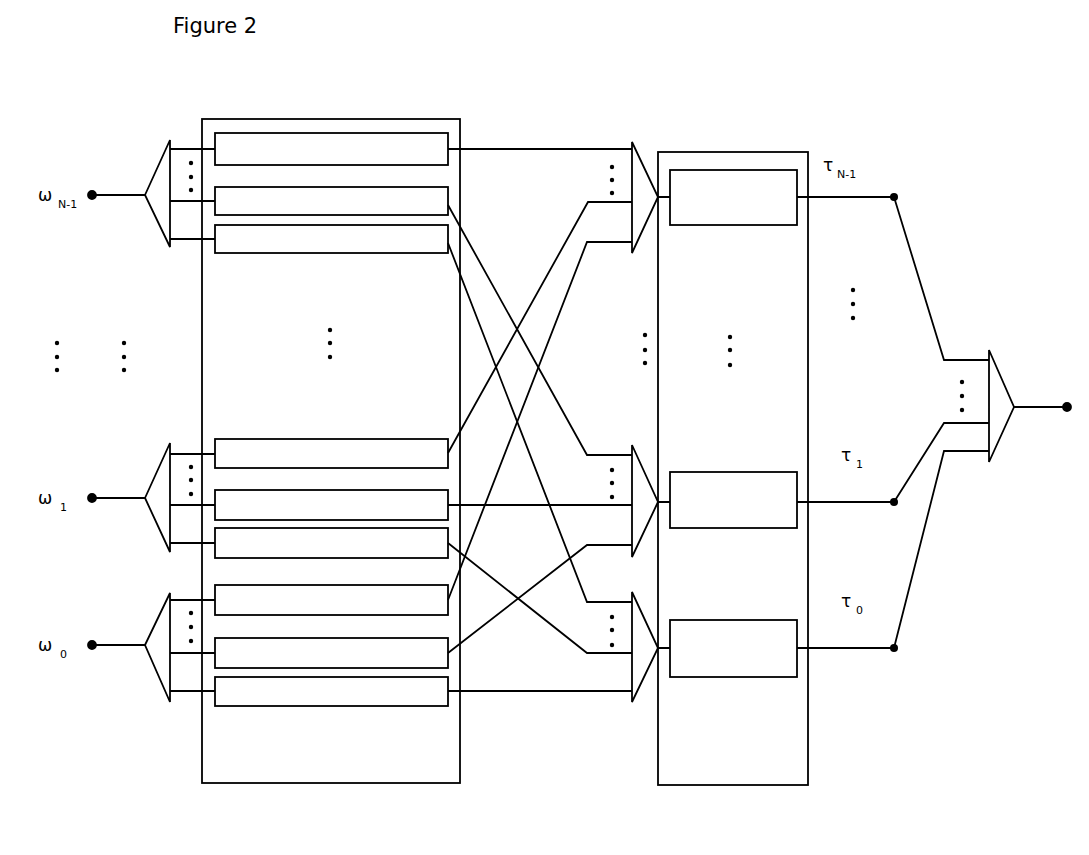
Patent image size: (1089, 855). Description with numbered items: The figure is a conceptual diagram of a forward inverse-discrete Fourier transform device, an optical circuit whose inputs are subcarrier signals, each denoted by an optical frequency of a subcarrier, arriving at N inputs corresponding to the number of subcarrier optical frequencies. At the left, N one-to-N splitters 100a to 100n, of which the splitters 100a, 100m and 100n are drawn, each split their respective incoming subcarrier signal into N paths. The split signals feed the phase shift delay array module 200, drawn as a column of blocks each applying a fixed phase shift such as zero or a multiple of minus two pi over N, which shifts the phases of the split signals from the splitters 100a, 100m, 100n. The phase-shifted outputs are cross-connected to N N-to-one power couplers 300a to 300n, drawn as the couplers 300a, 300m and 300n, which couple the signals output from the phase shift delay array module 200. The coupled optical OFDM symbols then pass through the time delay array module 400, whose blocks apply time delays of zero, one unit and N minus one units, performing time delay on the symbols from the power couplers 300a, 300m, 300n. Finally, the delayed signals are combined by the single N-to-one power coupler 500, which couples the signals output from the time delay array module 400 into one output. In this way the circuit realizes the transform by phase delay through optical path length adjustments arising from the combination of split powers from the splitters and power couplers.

The 1:N splitter 100a is at (164, 153).
The 1:N splitter 100m is at (163, 458).
The 1:N splitter 100n is at (165, 603).
The phase shift delay array module 200 is at (328, 118).
The N:1 power coupler 300a is at (638, 152).
The N:1 power coupler 300m is at (637, 453).
The N:1 power coupler 300n is at (638, 695).
The time delay array module 400 is at (733, 152).
The N:1 power coupler 500 is at (997, 367).